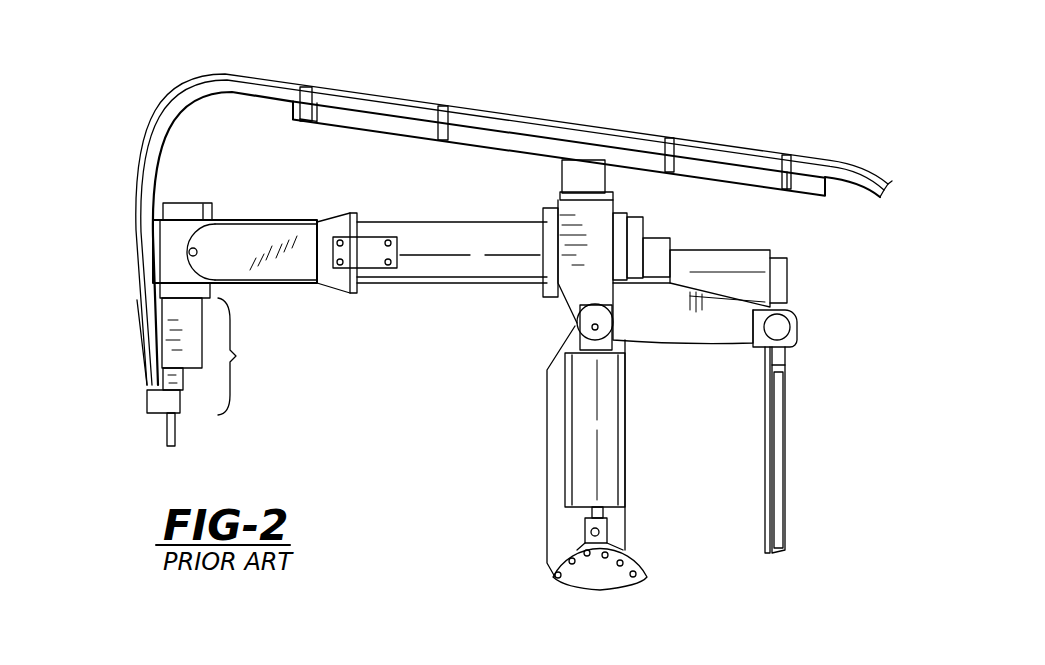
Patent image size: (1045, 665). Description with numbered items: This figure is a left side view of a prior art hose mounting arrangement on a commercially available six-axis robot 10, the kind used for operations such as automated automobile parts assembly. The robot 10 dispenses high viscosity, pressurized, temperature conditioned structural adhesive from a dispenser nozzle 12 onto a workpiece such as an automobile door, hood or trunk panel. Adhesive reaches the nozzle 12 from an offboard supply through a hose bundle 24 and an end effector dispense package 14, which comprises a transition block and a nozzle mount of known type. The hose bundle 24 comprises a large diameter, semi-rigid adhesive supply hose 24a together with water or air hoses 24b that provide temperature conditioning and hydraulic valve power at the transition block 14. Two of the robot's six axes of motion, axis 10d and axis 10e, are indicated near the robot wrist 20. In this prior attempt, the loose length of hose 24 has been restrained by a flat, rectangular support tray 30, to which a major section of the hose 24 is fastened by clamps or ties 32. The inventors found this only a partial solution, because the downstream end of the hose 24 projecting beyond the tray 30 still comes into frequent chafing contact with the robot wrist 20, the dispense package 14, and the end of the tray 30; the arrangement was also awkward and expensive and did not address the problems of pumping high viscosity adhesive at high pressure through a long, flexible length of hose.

The six-axis robot 10 is at (547, 447).
The axis 10d is at (548, 216).
The axis 10e is at (198, 248).
The dispenser nozzle 12 is at (177, 432).
The dispense package 14 is at (216, 349).
The robot wrist 20 is at (191, 203).
The hose bundle 24 is at (222, 73).
The adhesive supply hose 24a is at (147, 382).
The water or air hoses 24b is at (143, 333).
The support tray 30 is at (534, 143).
The clamps or ties 32 is at (438, 118).